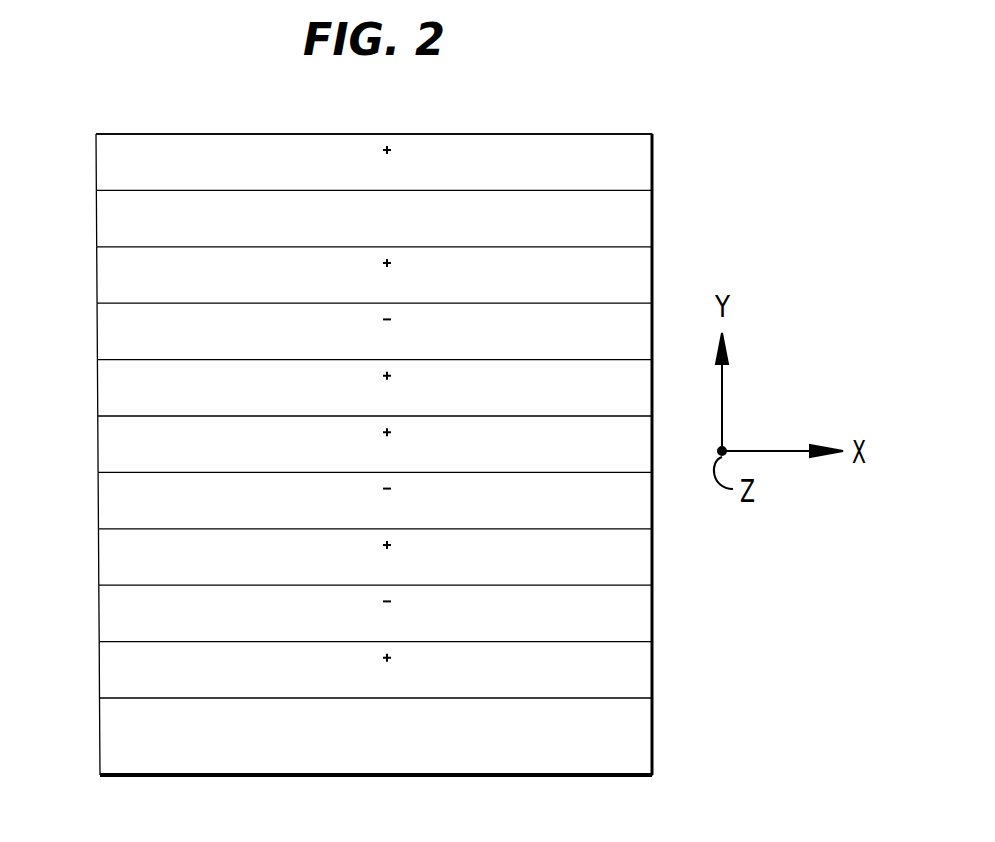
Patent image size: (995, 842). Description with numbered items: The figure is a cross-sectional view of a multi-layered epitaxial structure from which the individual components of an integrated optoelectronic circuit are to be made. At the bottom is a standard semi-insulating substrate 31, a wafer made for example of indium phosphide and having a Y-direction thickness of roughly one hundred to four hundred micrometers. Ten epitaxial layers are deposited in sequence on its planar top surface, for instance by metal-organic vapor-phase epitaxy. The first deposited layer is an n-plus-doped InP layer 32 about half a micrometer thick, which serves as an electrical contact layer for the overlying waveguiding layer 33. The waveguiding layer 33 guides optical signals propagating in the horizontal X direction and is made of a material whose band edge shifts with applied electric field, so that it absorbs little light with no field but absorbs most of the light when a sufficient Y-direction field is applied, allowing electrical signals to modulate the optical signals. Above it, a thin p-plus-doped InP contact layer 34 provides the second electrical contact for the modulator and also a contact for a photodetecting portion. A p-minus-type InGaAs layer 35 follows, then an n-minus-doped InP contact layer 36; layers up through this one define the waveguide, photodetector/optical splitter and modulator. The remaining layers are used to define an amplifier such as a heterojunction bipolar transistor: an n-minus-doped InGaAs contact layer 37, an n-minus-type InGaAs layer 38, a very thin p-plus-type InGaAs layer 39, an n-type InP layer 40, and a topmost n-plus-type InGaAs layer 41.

The semi-insulating substrate 31 is at (100, 736).
The n+-doped layer 32 is at (99, 670).
The waveguiding layer 33 is at (99, 613).
The p+-doped contact layer 34 is at (99, 557).
The p--type InGaAs layer 35 is at (98, 501).
The n--doped contact layer 36 is at (98, 444).
The n--doped contact layer 37 is at (98, 388).
The n--type InGaAs layer 38 is at (97, 331).
The p+-type InGaAs layer 39 is at (97, 275).
The n-type InP layer 40 is at (96, 219).
The n+-type InGaAs layer 41 is at (96, 162).